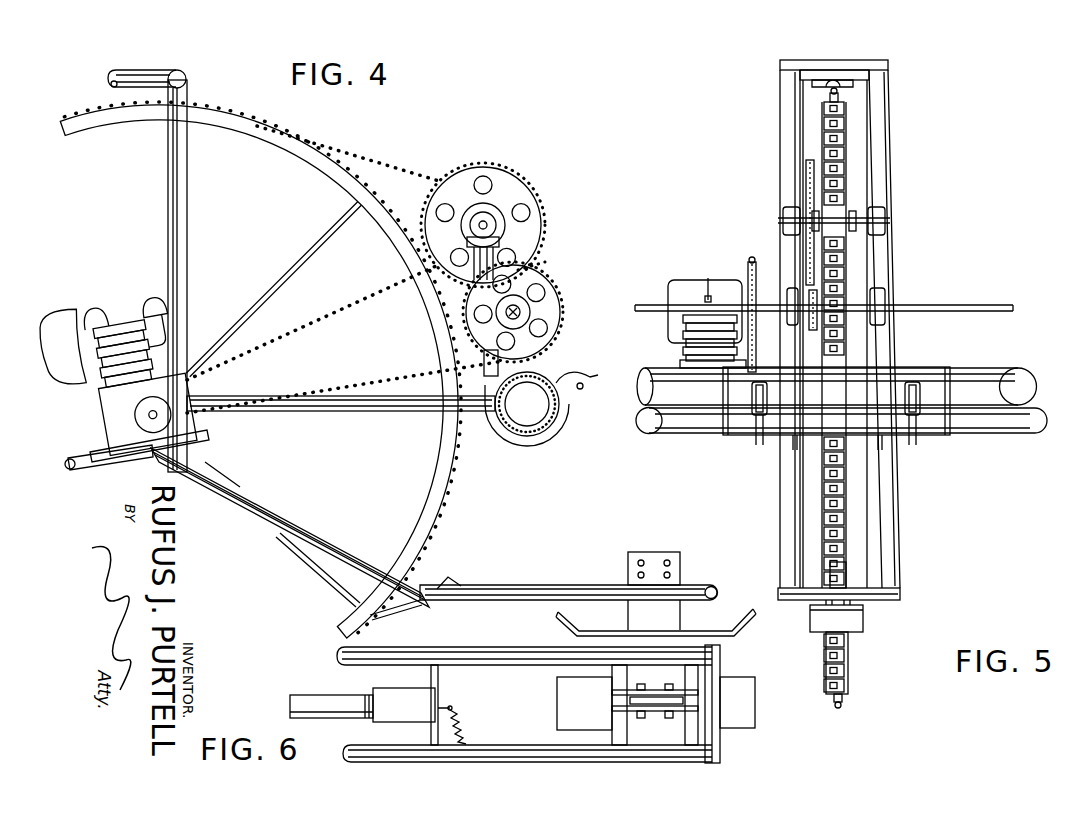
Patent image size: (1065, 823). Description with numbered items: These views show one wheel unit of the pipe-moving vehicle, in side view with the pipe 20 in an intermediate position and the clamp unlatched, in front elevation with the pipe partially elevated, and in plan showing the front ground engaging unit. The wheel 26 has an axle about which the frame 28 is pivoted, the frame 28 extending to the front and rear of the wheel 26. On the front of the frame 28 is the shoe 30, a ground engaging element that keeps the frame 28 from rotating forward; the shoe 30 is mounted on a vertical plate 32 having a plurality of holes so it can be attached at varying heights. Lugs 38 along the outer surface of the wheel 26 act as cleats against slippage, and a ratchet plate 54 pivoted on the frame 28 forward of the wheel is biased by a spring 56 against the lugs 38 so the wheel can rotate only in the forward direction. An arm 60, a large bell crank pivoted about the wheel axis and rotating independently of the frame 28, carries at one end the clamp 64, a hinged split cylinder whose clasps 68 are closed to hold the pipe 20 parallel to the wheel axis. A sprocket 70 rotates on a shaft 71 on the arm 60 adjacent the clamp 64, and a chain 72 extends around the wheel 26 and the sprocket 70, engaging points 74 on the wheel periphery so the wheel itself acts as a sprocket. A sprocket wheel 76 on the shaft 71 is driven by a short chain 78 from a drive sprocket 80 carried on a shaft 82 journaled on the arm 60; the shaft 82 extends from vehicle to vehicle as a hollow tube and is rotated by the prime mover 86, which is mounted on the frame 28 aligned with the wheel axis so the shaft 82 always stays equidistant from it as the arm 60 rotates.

In FIG. 4, the pipe 20 is at (516, 399).
In FIG. 5, the pipe 20 is at (1028, 420).
In FIG. 4, the wheel 26 is at (440, 440).
In FIG. 5, the wheel 26 is at (852, 682).
In FIG. 6, the wheel 26 is at (307, 707).
In FIG. 4, the frame 28 is at (300, 525).
In FIG. 5, the frame 28 is at (888, 520).
In FIG. 6, the frame 28 is at (375, 748).
In FIG. 4, the shoe 30 is at (748, 615).
In FIG. 5, the shoe 30 is at (864, 620).
In FIG. 6, the shoe 30 is at (745, 713).
In FIG. 4, the vertical plate 32 is at (650, 565).
In FIG. 5, the vertical plate 32 is at (843, 562).
In FIG. 6, the vertical plate 32 is at (680, 697).
In FIG. 4, the lugs 38 is at (264, 131).
In FIG. 4, the ratchet plate 54 is at (393, 609).
In FIG. 6, the ratchet plate 54 is at (416, 697).
In FIG. 4, the spring 56 is at (456, 584).
In FIG. 6, the spring 56 is at (462, 729).
In FIG. 4, the arm 60 is at (189, 186).
In FIG. 5, the arm 60 is at (872, 138).
In FIG. 4, the clamp 64 is at (559, 428).
In FIG. 5, the clamp 64 is at (930, 385).
In FIG. 4, the clasps 68 is at (577, 386).
In FIG. 5, the clasps 68 is at (755, 437).
In FIG. 5, the sprocket 70 is at (855, 230).
In FIG. 4, the shaft 71 is at (488, 222).
In FIG. 5, the shaft 71 is at (855, 214).
In FIG. 4, the chain 72 is at (393, 158).
In FIG. 5, the chain 72 is at (848, 665).
In FIG. 5, the points 74 is at (842, 96).
In FIG. 4, the sprocket wheel 76 is at (492, 183).
In FIG. 4, the short chain 78 is at (538, 262).
In FIG. 5, the short chain 78 is at (806, 258).
In FIG. 5, the drive sprocket 80 is at (812, 322).
In FIG. 4, the shaft 82 is at (521, 312).
In FIG. 5, the shaft 82 is at (935, 307).
In FIG. 4, the prime mover 86 is at (112, 398).
In FIG. 5, the prime mover 86 is at (684, 345).